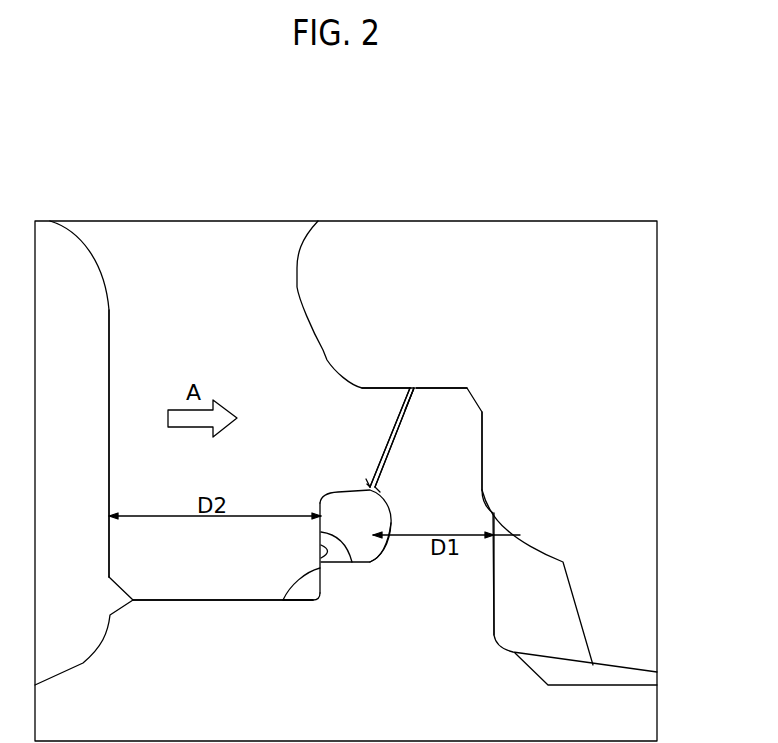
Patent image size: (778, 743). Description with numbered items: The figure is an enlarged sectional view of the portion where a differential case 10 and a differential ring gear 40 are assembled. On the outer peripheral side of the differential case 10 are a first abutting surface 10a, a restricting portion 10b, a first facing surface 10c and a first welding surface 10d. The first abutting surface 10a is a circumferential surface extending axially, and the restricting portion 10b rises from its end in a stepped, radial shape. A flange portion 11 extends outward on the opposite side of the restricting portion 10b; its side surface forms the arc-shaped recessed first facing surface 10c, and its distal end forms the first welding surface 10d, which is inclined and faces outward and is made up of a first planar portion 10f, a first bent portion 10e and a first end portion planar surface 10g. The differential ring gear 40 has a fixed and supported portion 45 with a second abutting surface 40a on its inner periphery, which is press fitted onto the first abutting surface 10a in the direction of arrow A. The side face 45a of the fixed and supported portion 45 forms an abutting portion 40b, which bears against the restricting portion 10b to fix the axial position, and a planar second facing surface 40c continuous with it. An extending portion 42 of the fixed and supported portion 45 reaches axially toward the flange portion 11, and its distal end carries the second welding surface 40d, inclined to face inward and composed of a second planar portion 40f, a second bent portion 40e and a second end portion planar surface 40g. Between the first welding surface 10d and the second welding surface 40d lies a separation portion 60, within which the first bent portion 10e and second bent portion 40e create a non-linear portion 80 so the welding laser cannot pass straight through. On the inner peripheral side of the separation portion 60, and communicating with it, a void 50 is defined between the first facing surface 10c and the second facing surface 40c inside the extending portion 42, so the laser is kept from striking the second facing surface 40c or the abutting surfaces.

The differential case 10 is at (579, 580).
The first abutting surface 10a is at (222, 602).
The restricting portion 10b is at (293, 600).
The first facing surface 10c is at (375, 558).
The first welding surface 10d is at (390, 447).
The first bent portion 10e is at (378, 478).
The first planar portion 10f is at (380, 458).
The first end portion planar surface 10g is at (381, 488).
The flange portion 11 is at (476, 445).
The differential ring gear 40 is at (306, 270).
The second abutting surface 40a is at (230, 598).
The abutting portion 40b is at (322, 578).
The second facing surface 40c is at (332, 565).
The second welding surface 40d is at (445, 387).
The second bent portion 40e is at (366, 479).
The second planar portion 40f is at (421, 403).
The second end portion planar surface 40g is at (367, 484).
The extending portion 42 is at (390, 388).
The fixed and supported portion 45 is at (160, 465).
The side face 45a is at (320, 543).
The void 50 is at (378, 513).
The separation portion 60 is at (416, 375).
The non-linear portion 80 is at (360, 462).